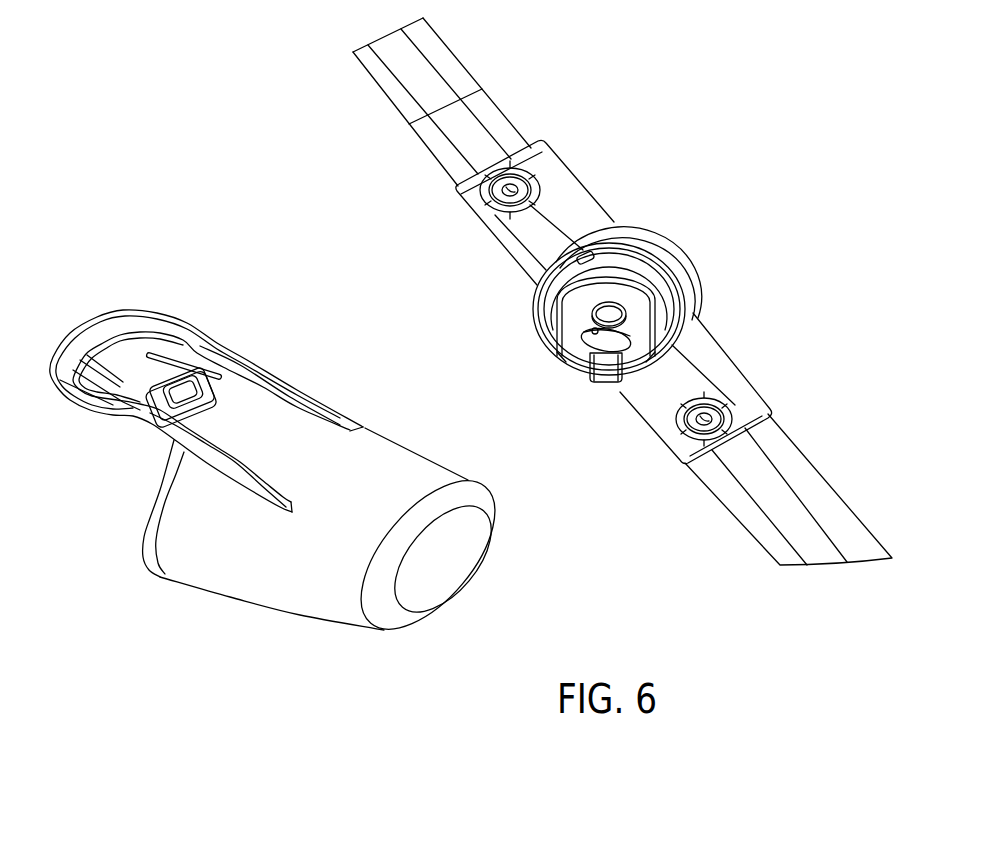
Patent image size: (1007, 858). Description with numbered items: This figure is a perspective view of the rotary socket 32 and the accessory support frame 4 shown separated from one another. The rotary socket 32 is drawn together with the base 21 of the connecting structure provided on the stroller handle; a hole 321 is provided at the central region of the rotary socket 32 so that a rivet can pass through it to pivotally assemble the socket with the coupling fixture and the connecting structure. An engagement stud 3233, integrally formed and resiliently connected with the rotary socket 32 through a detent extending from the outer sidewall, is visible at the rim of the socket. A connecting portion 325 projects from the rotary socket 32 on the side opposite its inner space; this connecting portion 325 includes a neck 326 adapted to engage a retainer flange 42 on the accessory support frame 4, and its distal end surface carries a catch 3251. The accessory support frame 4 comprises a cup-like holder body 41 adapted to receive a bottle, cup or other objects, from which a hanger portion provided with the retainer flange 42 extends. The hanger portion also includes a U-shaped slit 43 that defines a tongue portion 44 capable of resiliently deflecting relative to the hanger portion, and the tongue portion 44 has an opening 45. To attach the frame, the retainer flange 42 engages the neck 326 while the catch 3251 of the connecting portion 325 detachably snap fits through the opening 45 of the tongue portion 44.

The accessory support frame 4 is at (386, 399).
The holder body 41 is at (368, 472).
The retainer flange 42 is at (162, 313).
The U-shaped slit 43 is at (173, 363).
The tongue portion 44 is at (162, 382).
The opening 45 is at (210, 377).
The base 21 is at (685, 268).
The rotary socket 32 is at (652, 287).
The hole 321 is at (625, 316).
The connecting portion 325 is at (647, 348).
The catch 3251 is at (606, 382).
The neck 326 is at (665, 257).
The engagement stud 3233 is at (583, 252).